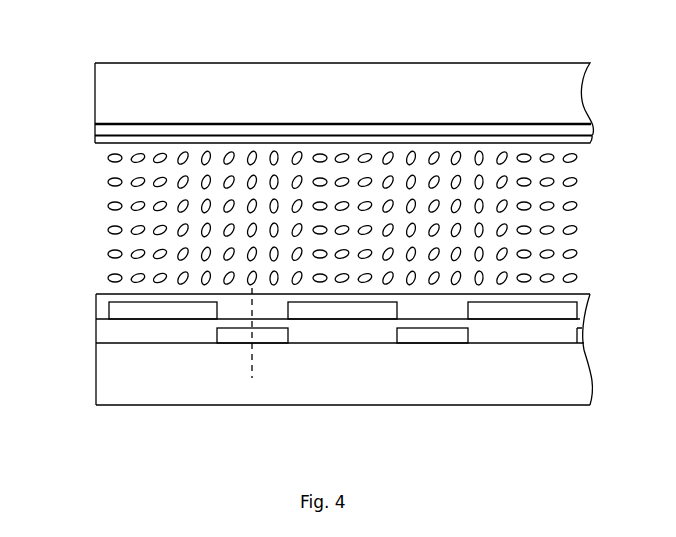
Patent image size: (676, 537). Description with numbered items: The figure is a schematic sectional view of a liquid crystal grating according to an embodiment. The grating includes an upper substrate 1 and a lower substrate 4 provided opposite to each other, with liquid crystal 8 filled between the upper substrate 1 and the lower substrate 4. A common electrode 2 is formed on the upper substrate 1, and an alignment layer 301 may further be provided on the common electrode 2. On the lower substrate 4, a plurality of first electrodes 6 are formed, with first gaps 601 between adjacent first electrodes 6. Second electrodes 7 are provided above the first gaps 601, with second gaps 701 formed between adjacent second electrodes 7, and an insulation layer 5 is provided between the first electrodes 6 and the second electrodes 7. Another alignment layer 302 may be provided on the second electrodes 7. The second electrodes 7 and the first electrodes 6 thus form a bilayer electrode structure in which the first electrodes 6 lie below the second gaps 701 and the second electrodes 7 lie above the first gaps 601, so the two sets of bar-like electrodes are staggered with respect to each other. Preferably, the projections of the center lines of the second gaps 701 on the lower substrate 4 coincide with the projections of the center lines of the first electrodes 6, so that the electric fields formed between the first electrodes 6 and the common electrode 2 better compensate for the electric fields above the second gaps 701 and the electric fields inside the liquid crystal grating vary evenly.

The upper substrate 1 is at (102, 77).
The common electrode 2 is at (103, 130).
The alignment layer 301 is at (100, 140).
The liquid crystal 8 is at (110, 205).
The alignment layer 302 is at (103, 308).
The second electrodes 7 is at (565, 315).
The second gaps 701 is at (237, 313).
The insulation layer 5 is at (103, 333).
The first electrodes 6 is at (433, 337).
The first gaps 601 is at (337, 338).
The lower substrate 4 is at (580, 387).